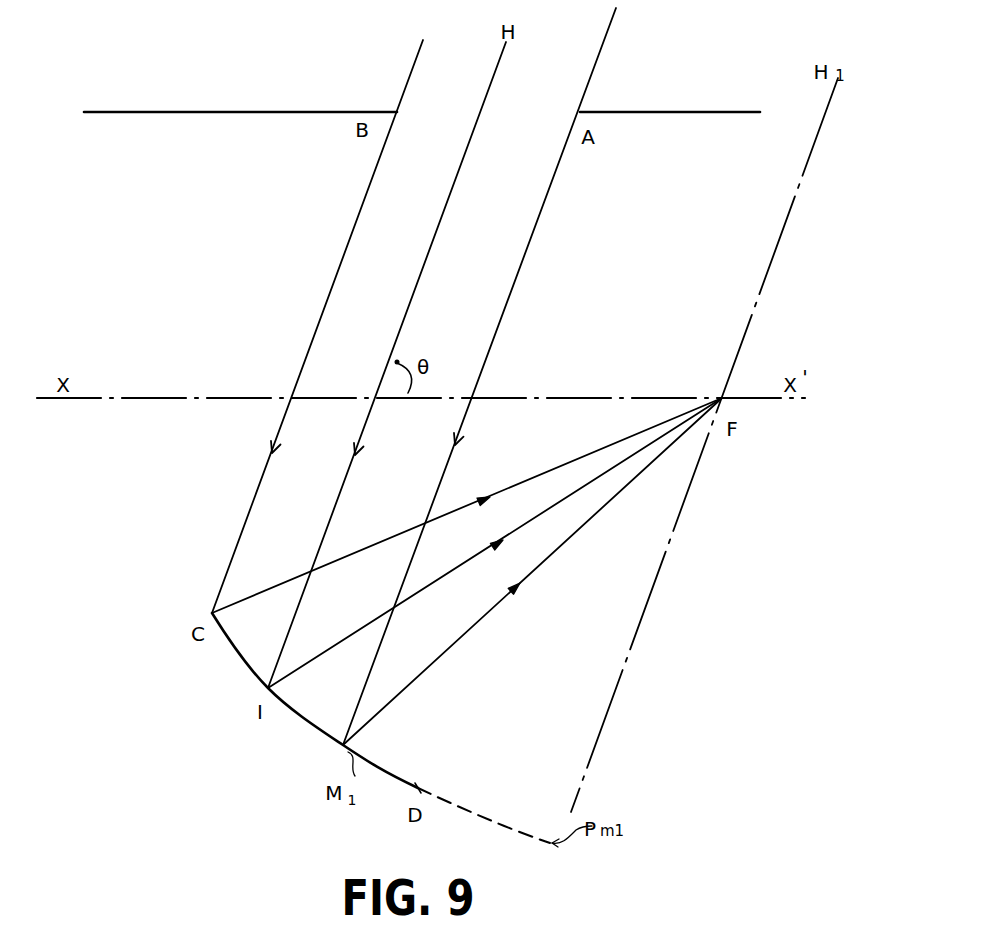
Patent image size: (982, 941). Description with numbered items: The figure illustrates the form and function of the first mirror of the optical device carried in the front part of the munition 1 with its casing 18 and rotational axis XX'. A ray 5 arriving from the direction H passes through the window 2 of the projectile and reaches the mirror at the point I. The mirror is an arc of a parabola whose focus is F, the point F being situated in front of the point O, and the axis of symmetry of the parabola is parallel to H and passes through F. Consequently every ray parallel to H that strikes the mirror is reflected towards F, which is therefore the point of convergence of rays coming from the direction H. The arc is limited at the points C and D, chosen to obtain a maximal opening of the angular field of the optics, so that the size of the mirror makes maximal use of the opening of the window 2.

The munition 1 is at (203, 130).
The casing 18 is at (268, 112).
The ray 5 is at (399, 106).
The window 2 is at (556, 106).